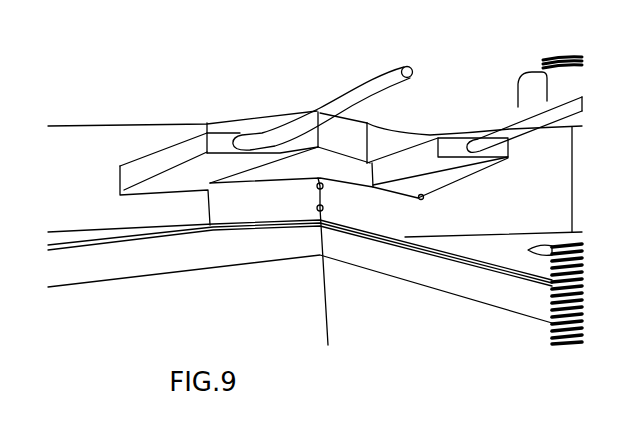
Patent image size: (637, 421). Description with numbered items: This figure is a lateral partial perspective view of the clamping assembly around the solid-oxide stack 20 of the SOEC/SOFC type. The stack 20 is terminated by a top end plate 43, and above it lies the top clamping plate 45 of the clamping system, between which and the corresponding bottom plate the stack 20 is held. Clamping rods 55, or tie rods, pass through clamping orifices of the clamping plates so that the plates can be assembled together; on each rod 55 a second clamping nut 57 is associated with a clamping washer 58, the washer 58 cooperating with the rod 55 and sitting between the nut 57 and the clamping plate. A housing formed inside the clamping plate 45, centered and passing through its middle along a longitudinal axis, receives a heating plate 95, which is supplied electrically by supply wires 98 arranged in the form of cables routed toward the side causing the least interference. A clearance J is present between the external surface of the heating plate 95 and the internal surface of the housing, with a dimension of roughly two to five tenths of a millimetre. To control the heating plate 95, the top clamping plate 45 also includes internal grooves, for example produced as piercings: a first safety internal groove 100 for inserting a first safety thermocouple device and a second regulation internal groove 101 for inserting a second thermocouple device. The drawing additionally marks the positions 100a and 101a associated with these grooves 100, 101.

The solid-oxide stack 20 is at (205, 309).
The top end plate 43 is at (74, 272).
The top clamping plate 45 is at (134, 134).
The clamping rod 55 is at (578, 284).
The second clamping nut 57 is at (533, 80).
The clamping washer 58 is at (578, 118).
The heating plate 95 is at (162, 180).
The supply wires 98 is at (385, 76).
The first safety internal groove 100 is at (322, 187).
The pivot pin end 100a is at (316, 186).
The second regulation internal groove 101 is at (316, 208).
The link rod end 101a is at (323, 210).
The clearance J is at (118, 168).